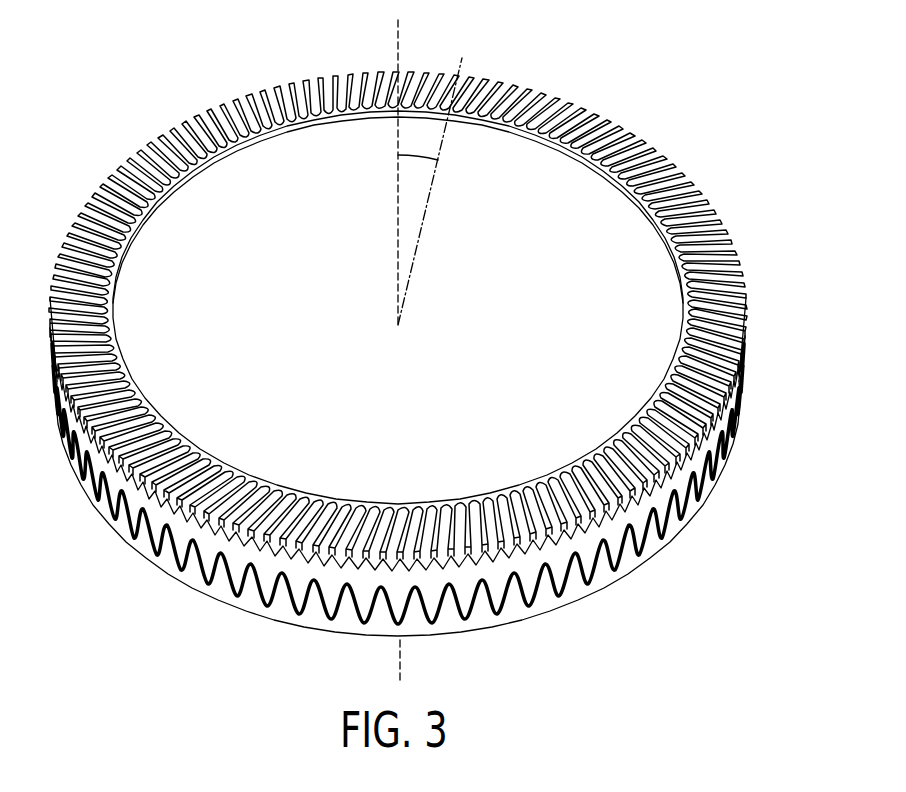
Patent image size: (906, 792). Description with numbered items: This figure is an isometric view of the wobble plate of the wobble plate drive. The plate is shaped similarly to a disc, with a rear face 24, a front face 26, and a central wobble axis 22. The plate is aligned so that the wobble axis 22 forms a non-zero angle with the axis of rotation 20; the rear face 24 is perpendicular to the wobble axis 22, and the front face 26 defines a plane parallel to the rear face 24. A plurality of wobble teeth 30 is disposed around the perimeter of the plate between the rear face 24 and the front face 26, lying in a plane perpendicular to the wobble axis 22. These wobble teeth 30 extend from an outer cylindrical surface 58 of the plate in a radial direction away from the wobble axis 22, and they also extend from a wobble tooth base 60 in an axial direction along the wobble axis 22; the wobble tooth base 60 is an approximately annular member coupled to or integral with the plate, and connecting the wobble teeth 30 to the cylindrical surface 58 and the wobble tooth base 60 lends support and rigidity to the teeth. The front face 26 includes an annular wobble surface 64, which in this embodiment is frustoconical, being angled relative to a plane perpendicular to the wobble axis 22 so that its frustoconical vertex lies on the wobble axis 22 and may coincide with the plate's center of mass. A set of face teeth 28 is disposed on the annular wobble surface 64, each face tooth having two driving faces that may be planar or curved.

The axis of rotation 20 is at (397, 34).
The wobble axis 22 is at (468, 44).
The rear face 24 is at (238, 611).
The front face 26 is at (524, 323).
The face teeth 28 is at (721, 255).
The wobble teeth 30 is at (120, 549).
The outer cylindrical surface 58 is at (688, 484).
The wobble tooth base 60 is at (590, 588).
The annular wobble surface 64 is at (173, 437).